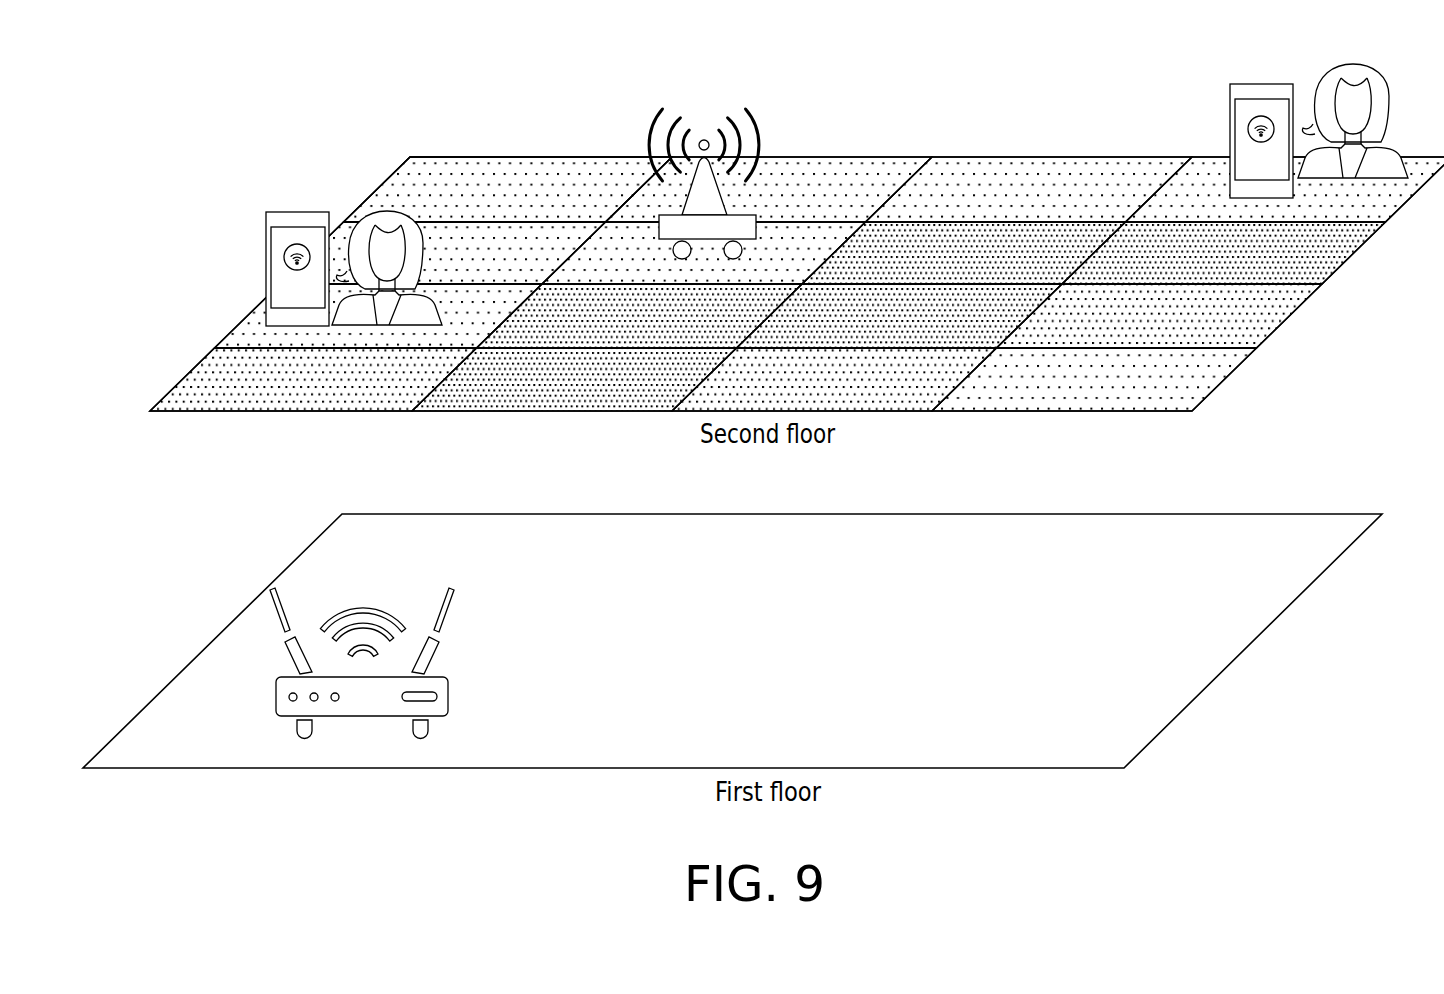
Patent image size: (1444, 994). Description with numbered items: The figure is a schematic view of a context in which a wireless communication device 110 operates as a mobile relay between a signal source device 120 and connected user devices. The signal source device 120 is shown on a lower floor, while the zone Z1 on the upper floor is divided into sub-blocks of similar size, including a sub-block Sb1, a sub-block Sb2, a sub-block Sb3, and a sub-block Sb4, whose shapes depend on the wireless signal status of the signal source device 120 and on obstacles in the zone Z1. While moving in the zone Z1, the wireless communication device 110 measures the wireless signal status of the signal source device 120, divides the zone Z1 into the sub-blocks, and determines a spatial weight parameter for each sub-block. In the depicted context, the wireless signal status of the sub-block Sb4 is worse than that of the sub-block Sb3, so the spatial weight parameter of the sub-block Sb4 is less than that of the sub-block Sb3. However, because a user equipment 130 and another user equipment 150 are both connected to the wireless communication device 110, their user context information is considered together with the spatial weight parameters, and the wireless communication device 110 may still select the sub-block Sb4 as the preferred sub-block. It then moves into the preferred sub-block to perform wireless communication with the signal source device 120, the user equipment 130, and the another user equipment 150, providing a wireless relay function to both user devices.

The wireless communication device 110 is at (659, 228).
The signal source device 120 is at (275, 697).
The user equipment 130 is at (1267, 84).
The another user equipment 150 is at (298, 212).
The zone Z1 is at (421, 156).
The sub-block Sb1 is at (494, 174).
The sub-block Sb2 is at (208, 382).
The sub-block Sb3 is at (1070, 248).
The sub-block Sb4 is at (812, 242).